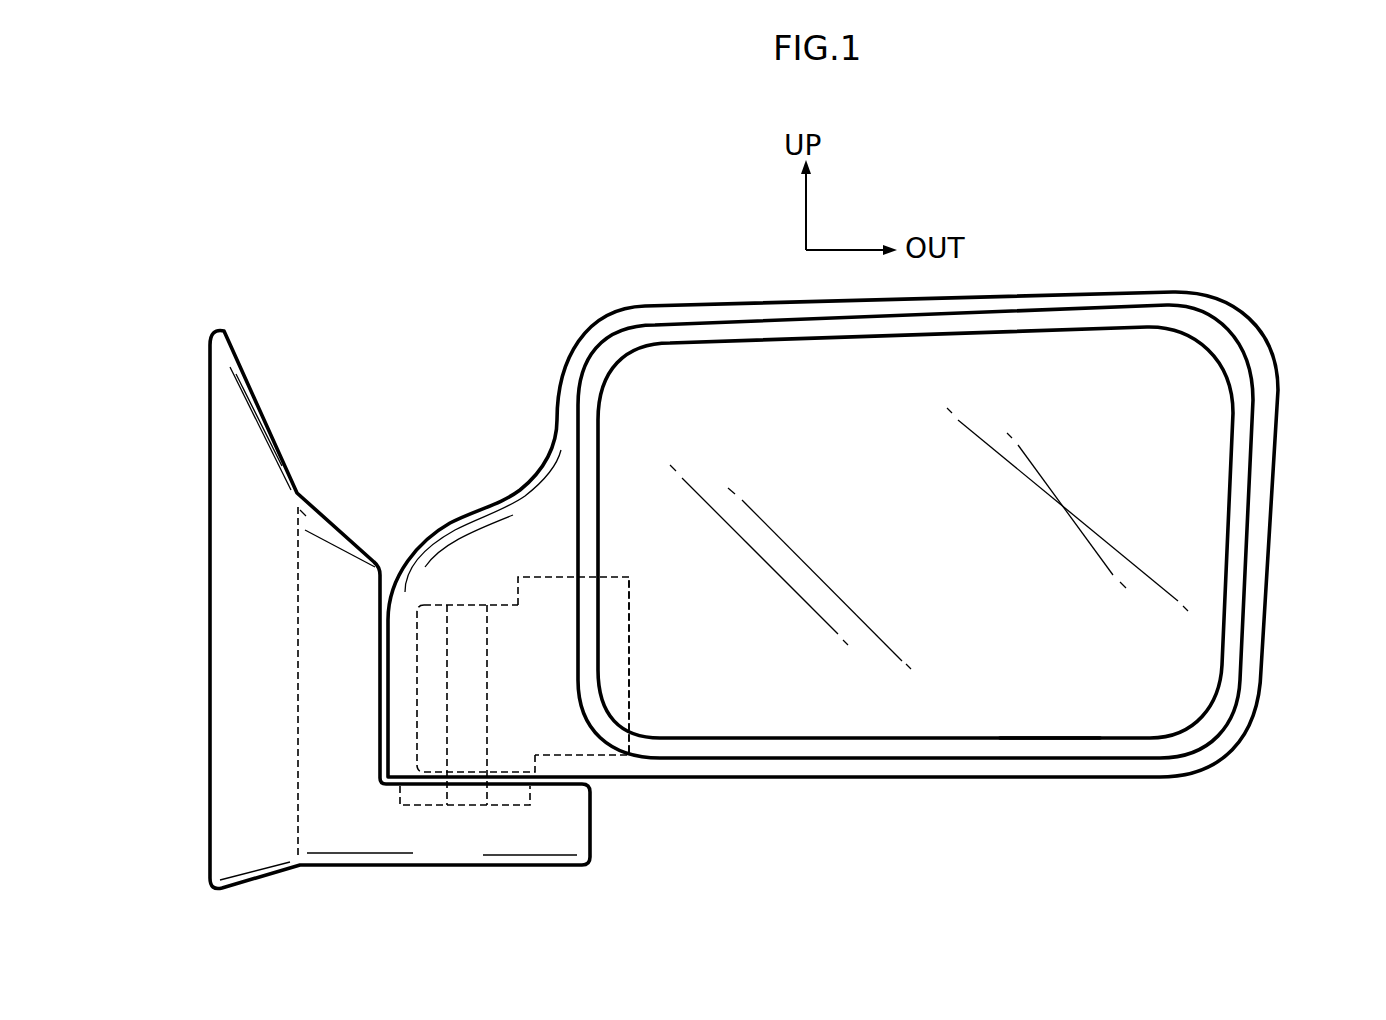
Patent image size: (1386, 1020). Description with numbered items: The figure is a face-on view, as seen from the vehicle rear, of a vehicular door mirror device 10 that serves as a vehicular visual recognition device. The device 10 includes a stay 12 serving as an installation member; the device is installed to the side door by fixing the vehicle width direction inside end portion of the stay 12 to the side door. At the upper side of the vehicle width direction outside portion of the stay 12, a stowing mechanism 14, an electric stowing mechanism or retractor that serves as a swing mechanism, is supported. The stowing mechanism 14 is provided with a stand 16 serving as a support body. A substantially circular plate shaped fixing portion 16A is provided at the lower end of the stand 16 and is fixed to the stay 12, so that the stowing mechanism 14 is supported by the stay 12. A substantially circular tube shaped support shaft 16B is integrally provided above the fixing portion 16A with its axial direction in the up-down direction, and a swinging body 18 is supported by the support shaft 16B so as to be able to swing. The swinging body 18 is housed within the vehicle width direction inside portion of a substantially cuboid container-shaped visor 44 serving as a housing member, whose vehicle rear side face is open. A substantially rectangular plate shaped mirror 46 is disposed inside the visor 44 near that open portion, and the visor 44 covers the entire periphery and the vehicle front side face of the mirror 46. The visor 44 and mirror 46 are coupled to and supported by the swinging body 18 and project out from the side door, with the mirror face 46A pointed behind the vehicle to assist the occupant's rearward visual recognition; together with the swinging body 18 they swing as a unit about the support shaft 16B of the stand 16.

The vehicular door mirror device 10 is at (424, 327).
The stay 12 is at (283, 452).
The stowing mechanism 14 is at (644, 602).
The stand 16 is at (445, 687).
The fixing portion 16A is at (473, 805).
The support shaft 16B is at (488, 708).
The swinging body 18 is at (630, 665).
The visor 44 is at (1270, 537).
The mirror 46 is at (1203, 633).
The mirror face 46A is at (1030, 700).